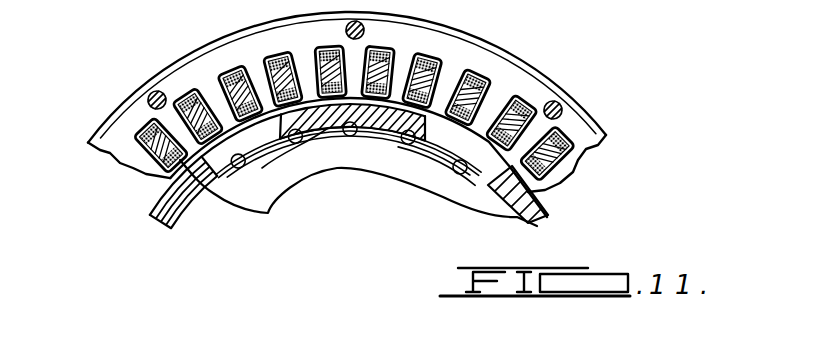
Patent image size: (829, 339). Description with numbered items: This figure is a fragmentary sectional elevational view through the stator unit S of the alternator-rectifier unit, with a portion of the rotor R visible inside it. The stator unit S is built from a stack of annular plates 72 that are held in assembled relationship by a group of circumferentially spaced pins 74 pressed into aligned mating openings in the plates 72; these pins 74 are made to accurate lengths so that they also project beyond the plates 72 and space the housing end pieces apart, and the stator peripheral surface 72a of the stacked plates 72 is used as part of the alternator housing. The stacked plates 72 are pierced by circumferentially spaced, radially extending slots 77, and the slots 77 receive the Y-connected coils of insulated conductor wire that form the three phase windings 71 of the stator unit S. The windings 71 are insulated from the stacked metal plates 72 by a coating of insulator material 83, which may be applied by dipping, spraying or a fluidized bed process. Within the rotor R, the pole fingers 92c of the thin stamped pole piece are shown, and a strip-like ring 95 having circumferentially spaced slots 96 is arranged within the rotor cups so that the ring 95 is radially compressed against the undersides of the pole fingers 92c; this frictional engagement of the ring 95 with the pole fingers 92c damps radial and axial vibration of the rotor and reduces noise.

The annular plates 72 is at (222, 52).
The stator peripheral surface 72a is at (103, 118).
The stator unit S is at (122, 170).
The three phase windings 71 is at (440, 68).
The insulator material 83 is at (333, 50).
The slots 77 is at (503, 95).
The pins 74 is at (148, 100).
The rotor R is at (163, 228).
The pole fingers 92c is at (328, 128).
The strip-like ring 95 is at (437, 163).
The slots 96 is at (268, 214).